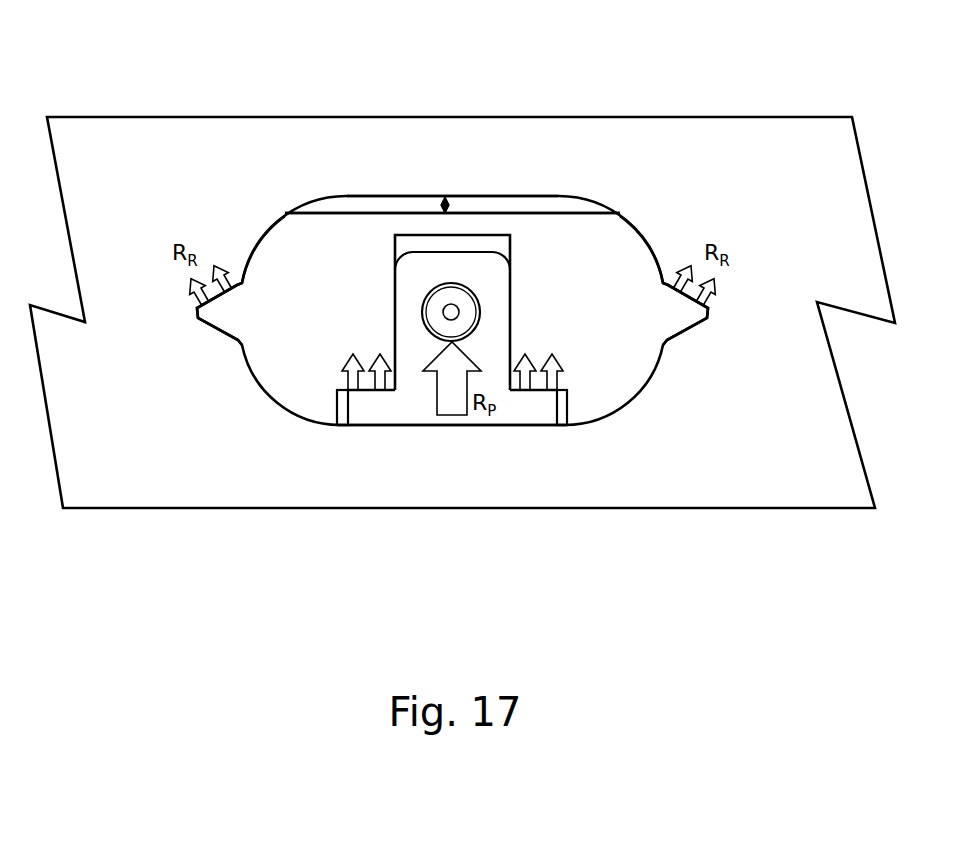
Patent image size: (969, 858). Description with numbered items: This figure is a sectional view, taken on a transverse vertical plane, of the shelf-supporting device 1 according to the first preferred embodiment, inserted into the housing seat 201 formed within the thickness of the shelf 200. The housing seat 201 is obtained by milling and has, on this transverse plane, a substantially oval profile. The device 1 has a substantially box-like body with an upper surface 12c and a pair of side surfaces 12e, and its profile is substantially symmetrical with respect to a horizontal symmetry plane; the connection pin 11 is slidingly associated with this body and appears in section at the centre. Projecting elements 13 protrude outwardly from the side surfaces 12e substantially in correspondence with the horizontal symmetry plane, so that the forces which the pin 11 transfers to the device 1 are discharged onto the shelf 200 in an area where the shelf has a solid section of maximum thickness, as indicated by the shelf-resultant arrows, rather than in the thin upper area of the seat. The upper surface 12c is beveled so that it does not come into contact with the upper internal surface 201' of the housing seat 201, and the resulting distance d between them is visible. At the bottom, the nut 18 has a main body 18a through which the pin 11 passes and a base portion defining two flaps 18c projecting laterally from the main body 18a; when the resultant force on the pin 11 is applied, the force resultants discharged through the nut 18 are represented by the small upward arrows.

The shelf-supporting device 1 is at (295, 186).
The connection pin 11 is at (465, 277).
The upper surface 12c is at (353, 213).
The side surfaces 12e is at (258, 240).
The projecting elements 13 is at (212, 316).
The nut 18 is at (462, 435).
The main body of the nut 18a is at (412, 273).
The flaps 18c is at (363, 402).
The shelf 200 is at (750, 157).
The housing seat 201 is at (452, 237).
The upper internal surface of the housing seat 201' is at (452, 106).
The distance d is at (450, 204).